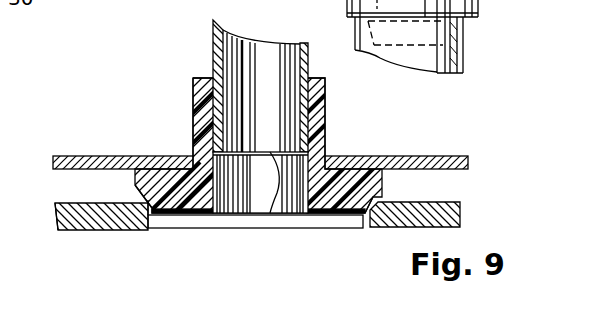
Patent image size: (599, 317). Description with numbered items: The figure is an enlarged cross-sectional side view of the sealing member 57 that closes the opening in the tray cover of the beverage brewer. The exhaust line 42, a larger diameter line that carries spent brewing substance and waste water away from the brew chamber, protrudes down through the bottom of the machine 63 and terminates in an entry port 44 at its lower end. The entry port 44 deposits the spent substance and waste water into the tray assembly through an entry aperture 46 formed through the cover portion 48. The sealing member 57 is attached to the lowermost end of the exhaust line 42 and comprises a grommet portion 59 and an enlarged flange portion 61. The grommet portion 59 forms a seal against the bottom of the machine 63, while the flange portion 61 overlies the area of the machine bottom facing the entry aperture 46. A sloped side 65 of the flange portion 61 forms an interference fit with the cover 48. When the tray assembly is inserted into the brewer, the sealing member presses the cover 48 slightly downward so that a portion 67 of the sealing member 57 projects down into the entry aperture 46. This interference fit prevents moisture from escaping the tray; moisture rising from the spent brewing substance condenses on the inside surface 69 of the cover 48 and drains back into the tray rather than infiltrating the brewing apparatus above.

The exhaust line 42 is at (213, 45).
The entry port 44 is at (270, 213).
The entry aperture 46 is at (150, 224).
The cover portion 48 is at (62, 218).
The sealing member 57 is at (339, 125).
The grommet portion 59 is at (195, 106).
The flange portion 61 is at (325, 197).
The bottom of the machine 63 is at (102, 156).
The sloped side 65 is at (382, 194).
The portion of the sealing member 67 is at (147, 203).
The inside surface 69 is at (115, 232).